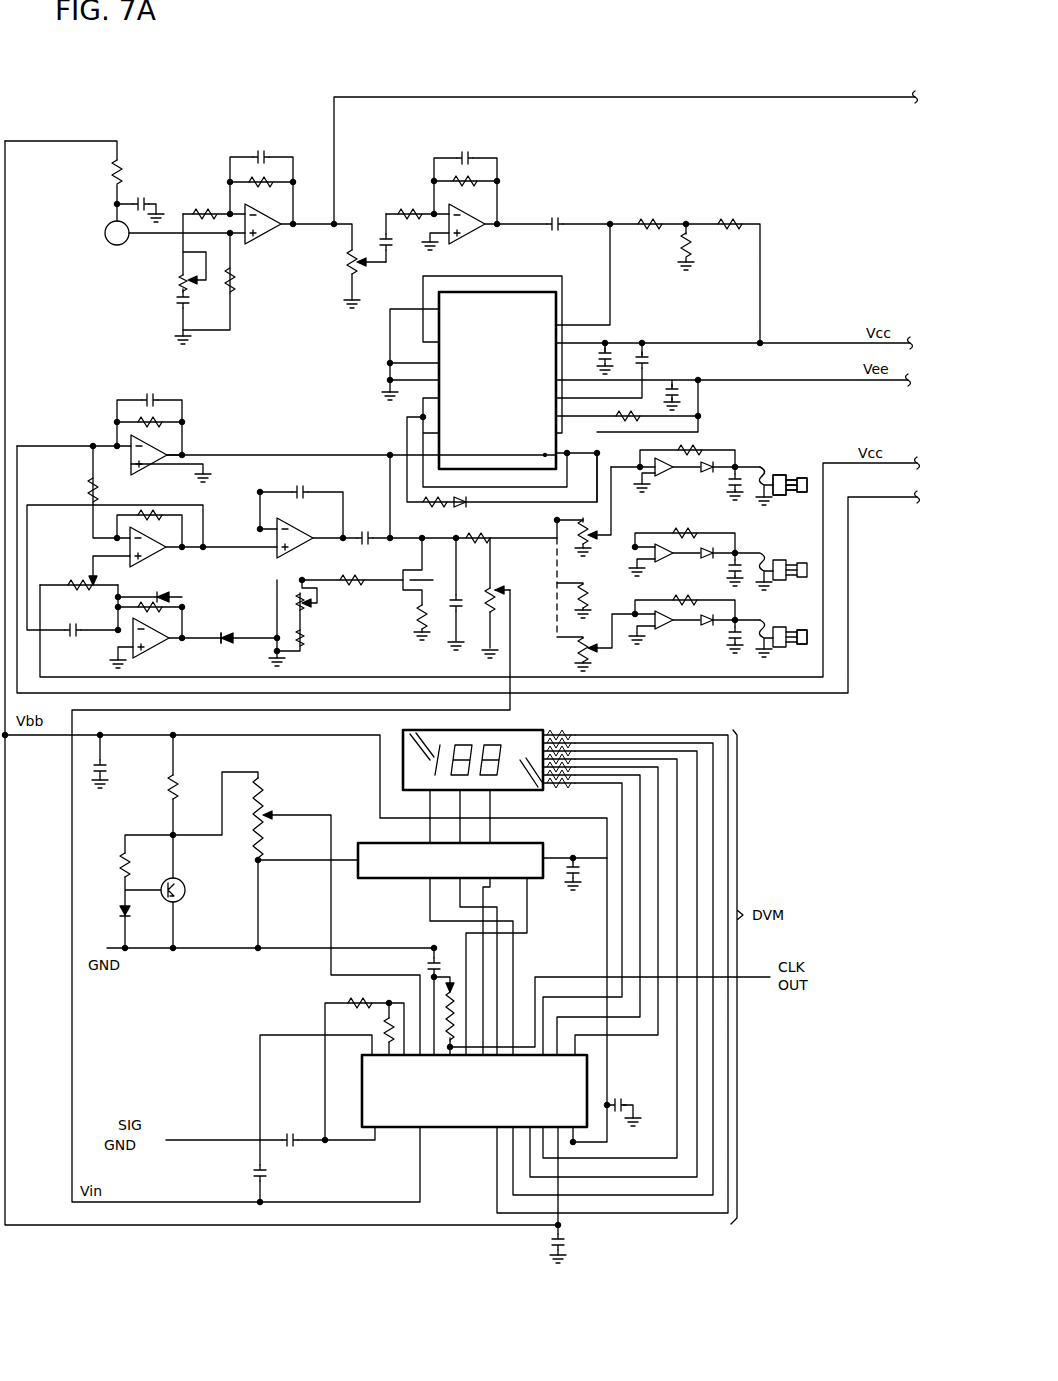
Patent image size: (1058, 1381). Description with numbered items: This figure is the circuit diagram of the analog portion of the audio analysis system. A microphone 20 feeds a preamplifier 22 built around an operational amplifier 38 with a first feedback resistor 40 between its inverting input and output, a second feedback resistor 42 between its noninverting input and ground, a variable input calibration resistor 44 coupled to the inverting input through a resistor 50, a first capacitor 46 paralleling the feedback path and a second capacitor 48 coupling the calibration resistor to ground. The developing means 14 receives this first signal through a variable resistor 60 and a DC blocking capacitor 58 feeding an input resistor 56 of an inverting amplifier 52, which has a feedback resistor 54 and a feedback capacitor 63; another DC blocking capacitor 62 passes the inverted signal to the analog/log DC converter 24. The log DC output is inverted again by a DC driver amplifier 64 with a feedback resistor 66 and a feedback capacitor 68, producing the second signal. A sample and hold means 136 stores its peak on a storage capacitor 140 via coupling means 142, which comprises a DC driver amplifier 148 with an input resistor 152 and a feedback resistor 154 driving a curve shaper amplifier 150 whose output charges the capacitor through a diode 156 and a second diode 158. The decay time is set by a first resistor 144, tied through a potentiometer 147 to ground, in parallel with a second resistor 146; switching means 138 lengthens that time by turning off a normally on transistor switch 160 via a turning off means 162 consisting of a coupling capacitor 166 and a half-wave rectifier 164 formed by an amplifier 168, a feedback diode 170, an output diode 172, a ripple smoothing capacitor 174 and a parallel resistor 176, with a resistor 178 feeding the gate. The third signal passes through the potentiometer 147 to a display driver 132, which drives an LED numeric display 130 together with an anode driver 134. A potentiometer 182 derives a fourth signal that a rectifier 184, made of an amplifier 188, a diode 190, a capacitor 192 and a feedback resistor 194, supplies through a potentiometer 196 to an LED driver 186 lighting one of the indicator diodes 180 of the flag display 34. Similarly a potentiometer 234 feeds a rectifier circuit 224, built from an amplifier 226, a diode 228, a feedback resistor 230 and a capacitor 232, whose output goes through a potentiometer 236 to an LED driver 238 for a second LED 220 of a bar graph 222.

The developing means 14 is at (614, 212).
The microphone 20 is at (107, 249).
The preamplifier 22 is at (182, 167).
The analog/log DC converter 24 is at (498, 290).
The flag display 34 is at (776, 510).
The operational amplifier 38 is at (279, 231).
The first feedback resistor 40 is at (254, 217).
The second feedback resistor 42 is at (236, 291).
The variable input calibration resistor 44 is at (179, 283).
The first capacitor 46 is at (261, 157).
The second capacitor 48 is at (177, 308).
The resistor 50 is at (206, 212).
The amplifier 52 is at (483, 230).
The feedback resistor 54 is at (484, 183).
The input resistor 56 is at (404, 210).
The DC blocking capacitor 58 is at (390, 248).
The variable resistor 60 is at (342, 272).
The DC blocking capacitor 62 is at (562, 222).
The feedback capacitor 63 is at (468, 158).
The DC driver amplifier 64 is at (140, 470).
The feedback resistor 66 is at (114, 455).
The feedback capacitor 68 is at (148, 400).
The LED numeric display 130 is at (520, 730).
The display driver 132 is at (448, 1132).
The anode driver 134 is at (378, 880).
The sample and hold means 136 is at (470, 604).
The switching means 138 is at (410, 611).
The storage capacitor 140 is at (460, 596).
The coupling means 142 is at (320, 548).
The first resistor 144 is at (486, 534).
The second resistor 146 is at (416, 635).
The potentiometer 147 is at (490, 594).
The DC driver amplifier 148 is at (130, 556).
The curve shaper amplifier 150 is at (287, 524).
The input resistor 152 is at (80, 476).
The feedback resistor 154 is at (176, 514).
The diode 156 is at (364, 530).
The second diode 158 is at (304, 490).
The transistor switch 160 is at (431, 571).
The turning off means 162 is at (216, 624).
The half-wave rectifier 164 is at (160, 645).
The coupling capacitor 166 is at (79, 595).
The amplifier 168 is at (98, 632).
The feedback diode 170 is at (160, 592).
The output diode 172 is at (224, 632).
The ripple smoothing capacitor 174 is at (302, 646).
The resistor 176 is at (304, 629).
The resistor 178 is at (346, 574).
The indicator diodes 180 is at (804, 476).
The potentiometer 182 is at (590, 516).
The rectifier 184 is at (754, 456).
The LED driver 186 is at (778, 470).
The amplifier 188 is at (664, 478).
The diode 190 is at (704, 476).
The capacitor 192 is at (740, 494).
The feedback resistor 194 is at (668, 448).
The potentiometer 196 is at (790, 496).
The second LED 220 is at (788, 644).
The bar graph 222 is at (808, 564).
The rectifier circuit 224 is at (622, 610).
The amplifier 226 is at (666, 630).
The diode 228 is at (704, 606).
The feedback resistor 230 is at (663, 562).
The capacitor 232 is at (732, 644).
The potentiometer 234 is at (598, 662).
The potentiometer 236 is at (764, 638).
The LED driver 238 is at (778, 632).